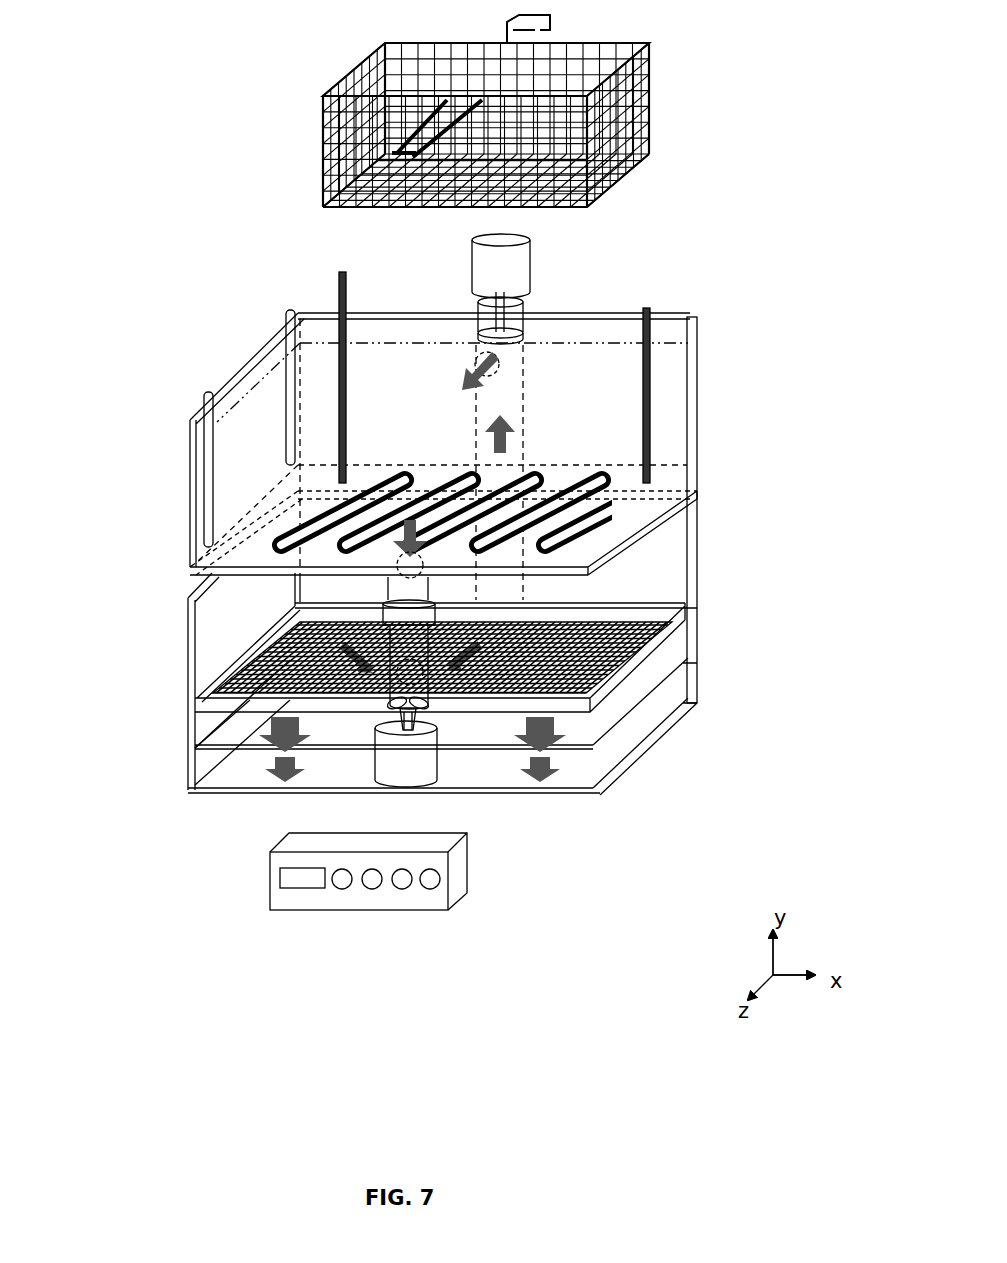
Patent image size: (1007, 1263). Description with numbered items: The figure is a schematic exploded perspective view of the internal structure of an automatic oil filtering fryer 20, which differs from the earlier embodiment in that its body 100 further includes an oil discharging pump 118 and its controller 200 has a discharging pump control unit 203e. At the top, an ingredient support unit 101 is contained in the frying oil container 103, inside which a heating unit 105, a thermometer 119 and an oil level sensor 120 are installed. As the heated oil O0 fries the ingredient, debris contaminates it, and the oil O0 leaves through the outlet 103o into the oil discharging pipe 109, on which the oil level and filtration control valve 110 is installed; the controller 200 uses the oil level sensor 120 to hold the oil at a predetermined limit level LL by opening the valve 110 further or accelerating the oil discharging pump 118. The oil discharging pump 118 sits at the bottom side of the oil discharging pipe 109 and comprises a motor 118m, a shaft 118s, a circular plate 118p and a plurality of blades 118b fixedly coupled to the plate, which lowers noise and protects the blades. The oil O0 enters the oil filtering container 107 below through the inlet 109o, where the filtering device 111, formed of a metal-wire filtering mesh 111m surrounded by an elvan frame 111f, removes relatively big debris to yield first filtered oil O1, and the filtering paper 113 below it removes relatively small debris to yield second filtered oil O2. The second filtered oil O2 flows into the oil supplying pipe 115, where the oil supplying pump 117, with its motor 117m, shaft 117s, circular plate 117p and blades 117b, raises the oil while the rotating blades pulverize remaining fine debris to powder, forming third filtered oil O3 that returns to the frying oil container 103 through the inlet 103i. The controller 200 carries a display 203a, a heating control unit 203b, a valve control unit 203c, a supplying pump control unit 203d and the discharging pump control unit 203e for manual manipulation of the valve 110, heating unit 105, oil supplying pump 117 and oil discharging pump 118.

The automatic oil filtering fryer 20 is at (838, 48).
The body 100 is at (702, 200).
The ingredient support unit 101 is at (322, 120).
The frying oil container 103 is at (258, 352).
The inlet 103i is at (535, 388).
The outlet 103o is at (300, 572).
The heating unit 105 is at (330, 508).
The oil filtering container 107 is at (195, 592).
The oil discharging pipe 109 is at (298, 602).
The inlet 109o is at (440, 697).
The oil level and filtration control valve 110 is at (305, 625).
The filtering device 111 is at (372, 720).
The filtering mesh 111m is at (235, 702).
The frame 111f is at (218, 723).
The filtering paper 113 is at (250, 735).
The oil supplying pipe 115 is at (525, 372).
The oil supplying pump 117 is at (665, 290).
The motor 117m is at (510, 270).
The shaft 117s is at (505, 300).
The circular plate 117p is at (505, 325).
The blades 117b is at (515, 340).
The oil discharging pump 118 is at (257, 804).
The blades 118b is at (398, 700).
The circular plate 118p is at (404, 712).
The shaft 118s is at (408, 725).
The motor 118m is at (400, 765).
The thermometer 119 is at (212, 470).
The oil level sensor 120 is at (287, 312).
The controller 200 is at (572, 886).
The display 203a is at (303, 881).
The heating control unit 203b is at (340, 888).
The valve control unit 203c is at (372, 890).
The supplying pump control unit 203d is at (402, 890).
The discharging pump control unit 203e is at (436, 887).
The limit level LL is at (268, 392).
The oil O0 is at (425, 552).
The first filtered oil O1 is at (553, 727).
The second filtered oil O2 is at (488, 420).
The third filtered oil O3 is at (468, 378).